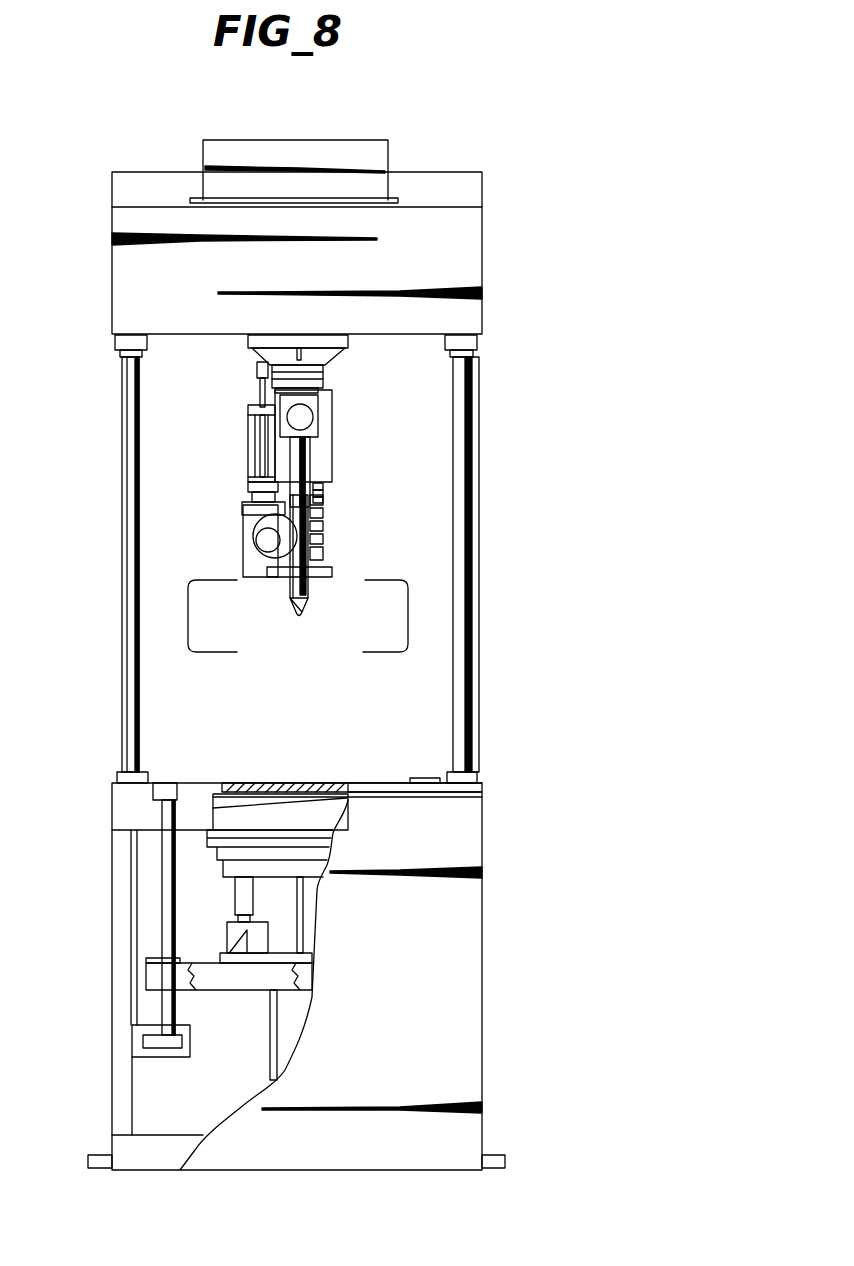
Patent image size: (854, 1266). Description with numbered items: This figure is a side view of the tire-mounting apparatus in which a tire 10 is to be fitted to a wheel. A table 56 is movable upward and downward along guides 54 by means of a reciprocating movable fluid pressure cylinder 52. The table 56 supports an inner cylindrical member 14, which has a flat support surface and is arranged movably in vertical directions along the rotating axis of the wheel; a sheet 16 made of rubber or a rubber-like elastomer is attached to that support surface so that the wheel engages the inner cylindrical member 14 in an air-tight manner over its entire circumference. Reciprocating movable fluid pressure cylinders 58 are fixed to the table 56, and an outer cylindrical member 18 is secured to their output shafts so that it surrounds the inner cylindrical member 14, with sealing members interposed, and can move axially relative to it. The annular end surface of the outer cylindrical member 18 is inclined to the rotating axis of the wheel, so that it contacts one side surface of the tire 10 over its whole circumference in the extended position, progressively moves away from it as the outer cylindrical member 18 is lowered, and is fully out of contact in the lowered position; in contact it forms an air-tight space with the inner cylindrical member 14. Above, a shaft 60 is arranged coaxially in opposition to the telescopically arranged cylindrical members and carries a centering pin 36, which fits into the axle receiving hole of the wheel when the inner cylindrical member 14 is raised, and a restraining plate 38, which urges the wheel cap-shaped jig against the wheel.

The tire 10 is at (408, 613).
The inner cylindrical member 14 is at (213, 782).
The sheet 16 is at (337, 782).
The outer cylindrical member 18 is at (218, 817).
The centering pin 36 is at (305, 612).
The restraining plate 38 is at (320, 590).
The fluid pressure cylinder 52 is at (265, 1047).
The guides 54 is at (158, 1013).
The table 56 is at (146, 977).
The fluid pressure cylinders 58 is at (227, 930).
The shaft 60 is at (332, 463).